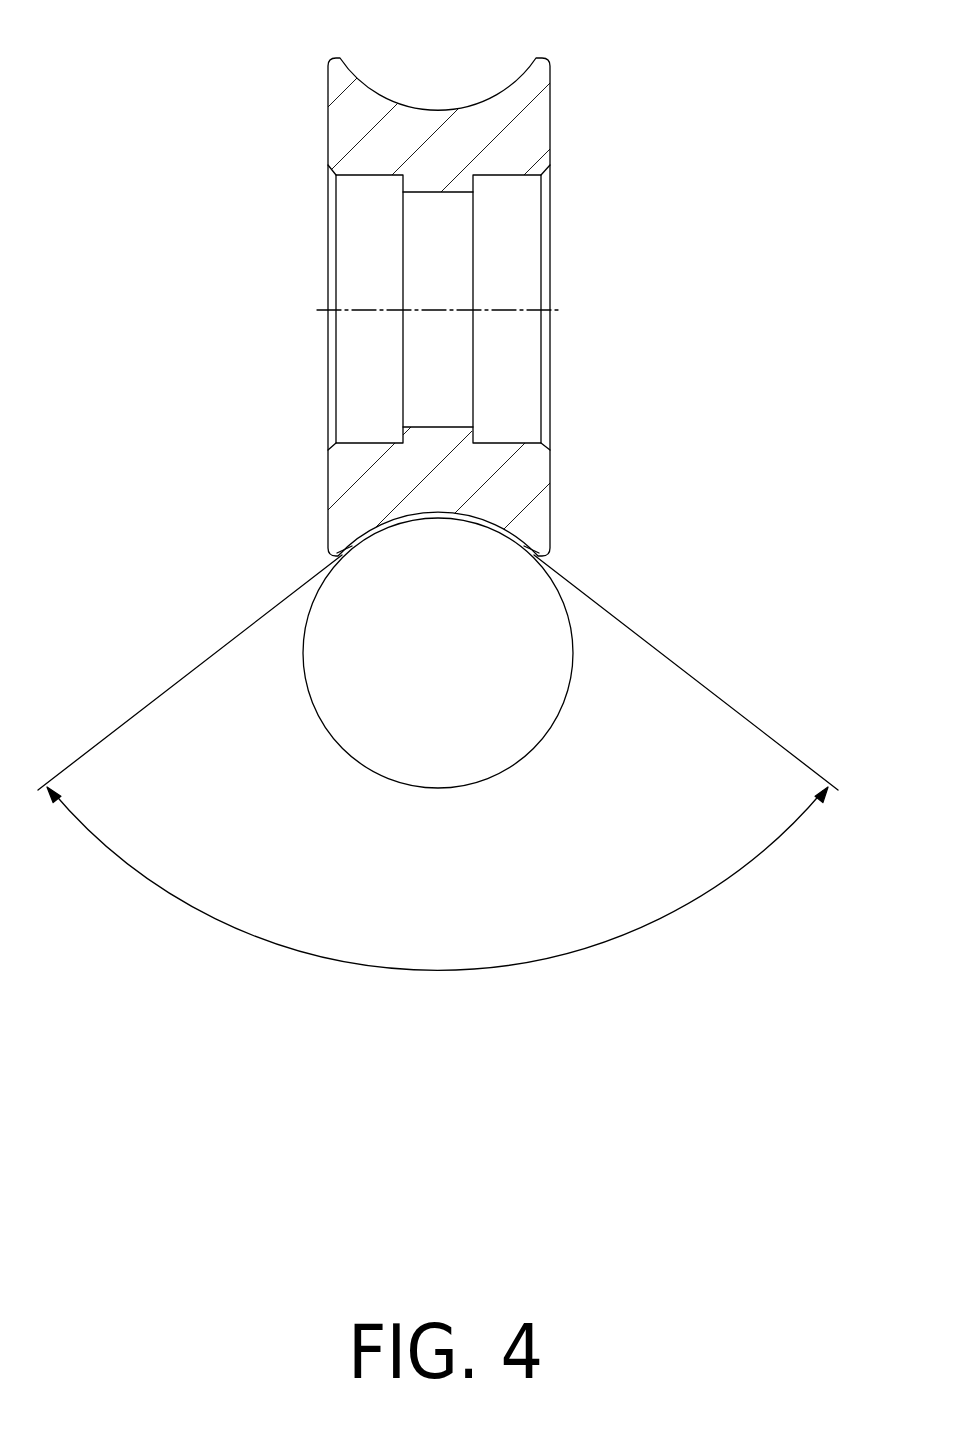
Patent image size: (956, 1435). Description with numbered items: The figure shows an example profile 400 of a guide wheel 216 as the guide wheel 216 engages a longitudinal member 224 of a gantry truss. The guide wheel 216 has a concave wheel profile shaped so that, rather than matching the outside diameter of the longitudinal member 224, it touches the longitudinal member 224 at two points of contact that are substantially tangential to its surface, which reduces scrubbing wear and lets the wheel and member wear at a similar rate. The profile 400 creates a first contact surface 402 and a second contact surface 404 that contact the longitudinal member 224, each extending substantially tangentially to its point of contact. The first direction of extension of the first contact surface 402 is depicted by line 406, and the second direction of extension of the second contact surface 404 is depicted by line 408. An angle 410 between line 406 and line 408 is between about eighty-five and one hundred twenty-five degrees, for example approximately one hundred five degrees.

The profile 400 is at (433, 290).
The guide wheel 216 is at (327, 100).
The longitudinal member 224 is at (438, 653).
The first contact surface 402 is at (350, 552).
The second contact surface 404 is at (527, 552).
The line 406 is at (223, 647).
The line 408 is at (679, 663).
The angle 410 is at (433, 977).